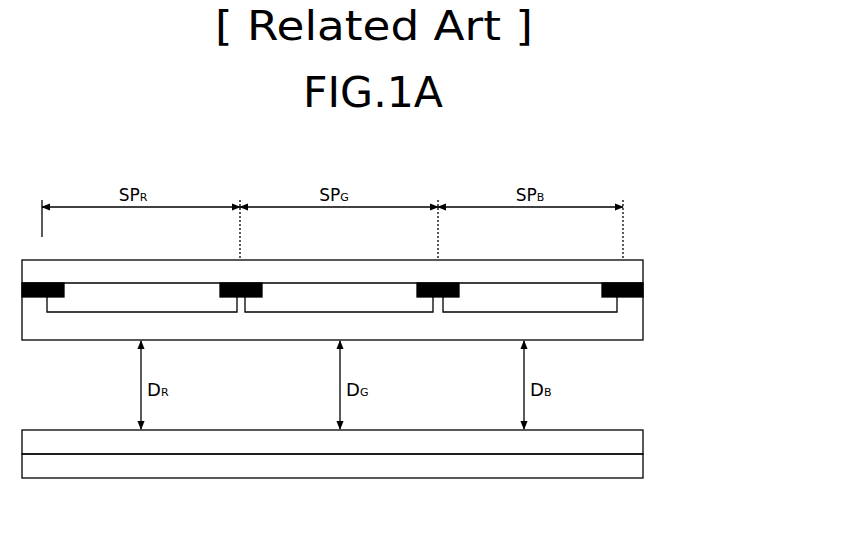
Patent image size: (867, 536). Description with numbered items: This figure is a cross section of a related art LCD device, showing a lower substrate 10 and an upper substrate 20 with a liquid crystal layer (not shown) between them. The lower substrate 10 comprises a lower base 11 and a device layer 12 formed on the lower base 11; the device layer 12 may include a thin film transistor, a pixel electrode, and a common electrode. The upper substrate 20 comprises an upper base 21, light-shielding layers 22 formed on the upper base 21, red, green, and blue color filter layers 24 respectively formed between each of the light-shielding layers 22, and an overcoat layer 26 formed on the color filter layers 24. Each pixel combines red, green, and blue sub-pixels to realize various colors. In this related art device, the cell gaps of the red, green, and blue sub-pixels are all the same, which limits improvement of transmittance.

The lower substrate 10 is at (388, 454).
The lower base 11 is at (638, 472).
The device layer 12 is at (638, 441).
The upper substrate 20 is at (389, 298).
The upper base 21 is at (636, 270).
The light-shielding layers 22 is at (640, 289).
The color filter layers 24 is at (614, 303).
The overcoat layer 26 is at (675, 326).